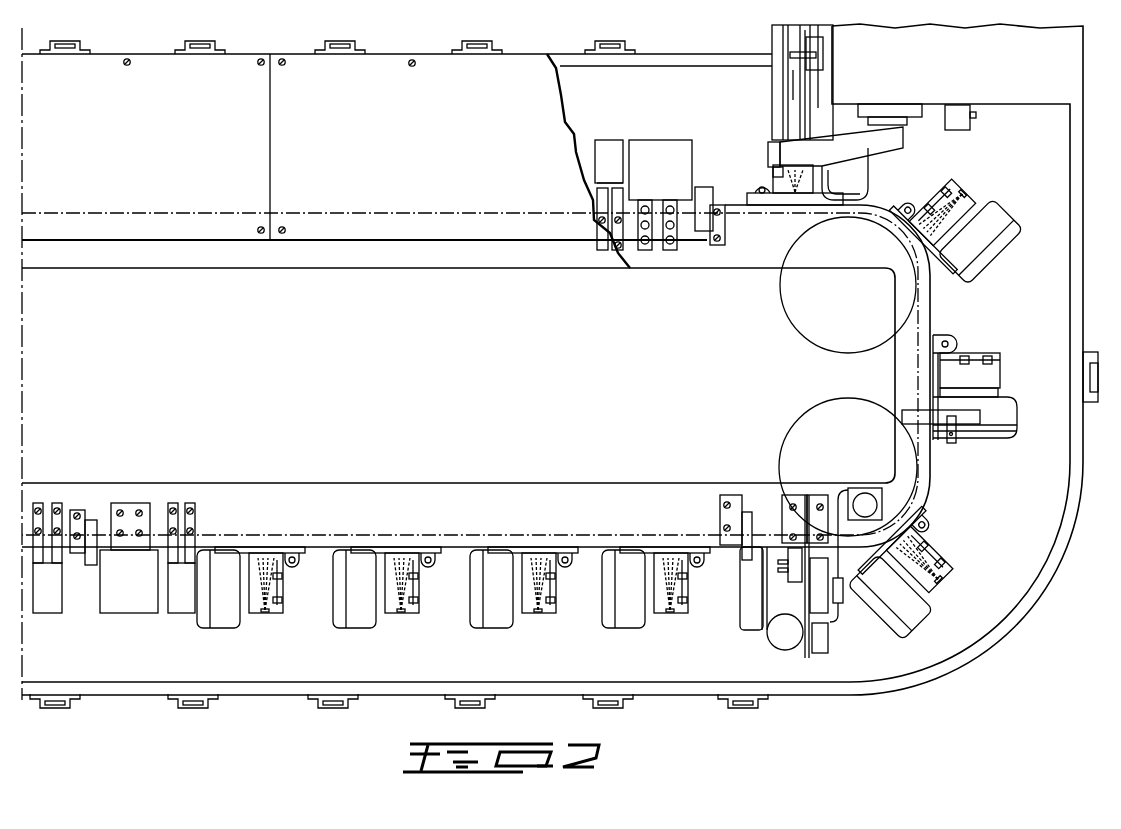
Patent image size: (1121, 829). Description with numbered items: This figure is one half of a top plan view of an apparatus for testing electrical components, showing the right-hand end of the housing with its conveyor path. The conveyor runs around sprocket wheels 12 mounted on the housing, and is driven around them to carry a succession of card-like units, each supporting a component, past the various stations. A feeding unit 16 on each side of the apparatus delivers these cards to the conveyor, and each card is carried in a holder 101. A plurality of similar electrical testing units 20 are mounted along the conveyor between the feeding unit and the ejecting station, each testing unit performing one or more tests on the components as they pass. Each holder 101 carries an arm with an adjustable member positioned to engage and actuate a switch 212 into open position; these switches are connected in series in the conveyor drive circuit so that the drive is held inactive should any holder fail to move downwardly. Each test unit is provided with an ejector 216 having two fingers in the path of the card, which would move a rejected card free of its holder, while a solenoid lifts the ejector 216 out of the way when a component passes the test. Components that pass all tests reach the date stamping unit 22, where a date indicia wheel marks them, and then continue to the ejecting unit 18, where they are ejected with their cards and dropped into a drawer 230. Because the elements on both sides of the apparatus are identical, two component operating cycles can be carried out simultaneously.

The sprocket wheel 12 is at (852, 353).
The feeding unit 16 is at (921, 137).
The ejecting unit 18 is at (1018, 391).
The electrical testing unit 20 is at (683, 140).
The date stamping unit 22 is at (757, 641).
The holder 101 is at (763, 150).
The switch 212 is at (706, 187).
The ejector 216 is at (605, 140).
The drawer 230 is at (1096, 403).